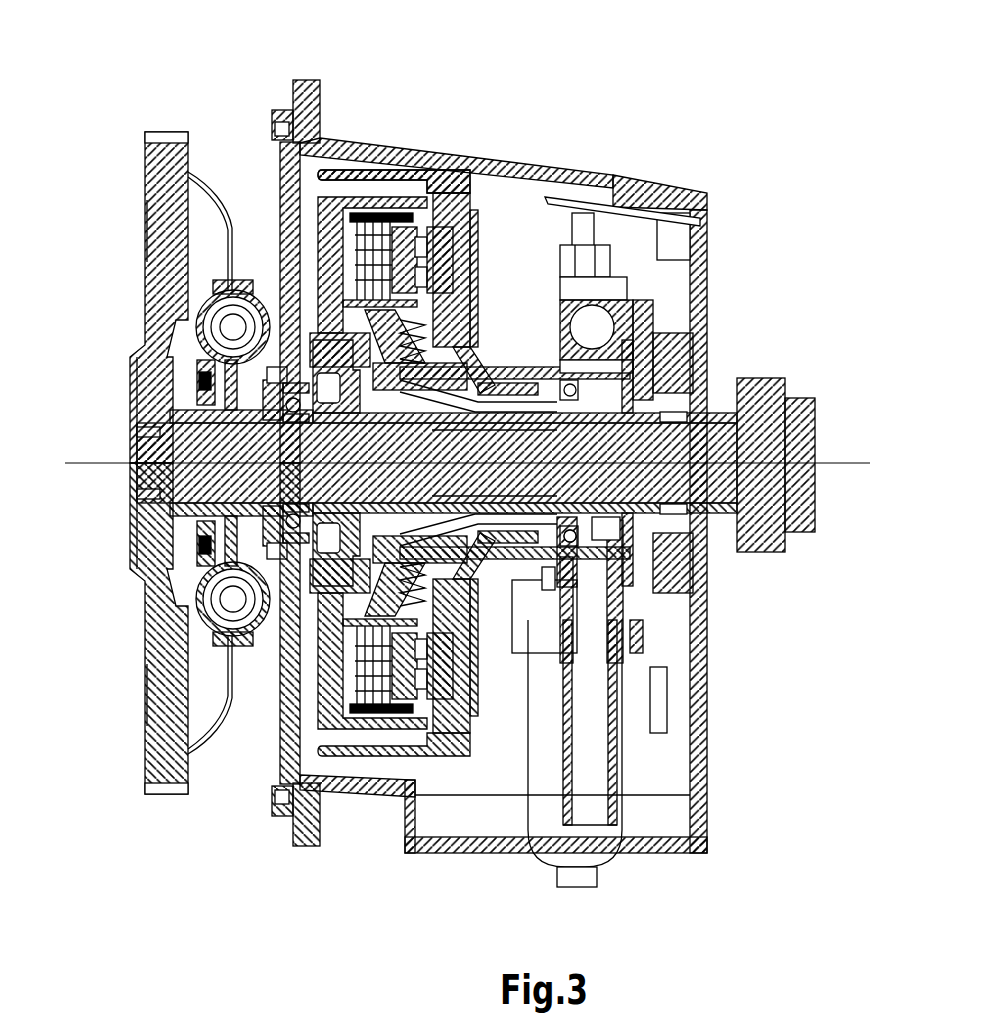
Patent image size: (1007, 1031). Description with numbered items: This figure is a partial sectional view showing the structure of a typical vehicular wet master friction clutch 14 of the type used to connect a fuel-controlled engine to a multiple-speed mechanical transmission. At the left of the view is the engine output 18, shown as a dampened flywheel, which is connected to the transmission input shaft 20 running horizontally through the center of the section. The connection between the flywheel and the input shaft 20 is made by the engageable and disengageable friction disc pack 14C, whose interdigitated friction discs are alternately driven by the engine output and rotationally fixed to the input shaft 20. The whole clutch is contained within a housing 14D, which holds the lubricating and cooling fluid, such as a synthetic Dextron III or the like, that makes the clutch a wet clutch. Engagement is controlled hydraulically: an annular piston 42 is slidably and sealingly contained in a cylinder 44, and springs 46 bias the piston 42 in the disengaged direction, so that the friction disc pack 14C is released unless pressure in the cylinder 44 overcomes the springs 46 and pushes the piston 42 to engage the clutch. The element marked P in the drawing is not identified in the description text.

The wet master friction clutch 14 is at (542, 475).
The friction disc pack 14C is at (378, 768).
The housing 14D is at (510, 165).
The engine output 18 is at (160, 282).
The input shaft 20 is at (800, 425).
The annular piston 42 is at (448, 663).
The cylinder 44 is at (468, 690).
The springs 46 is at (378, 592).
The pressure plate P is at (452, 172).